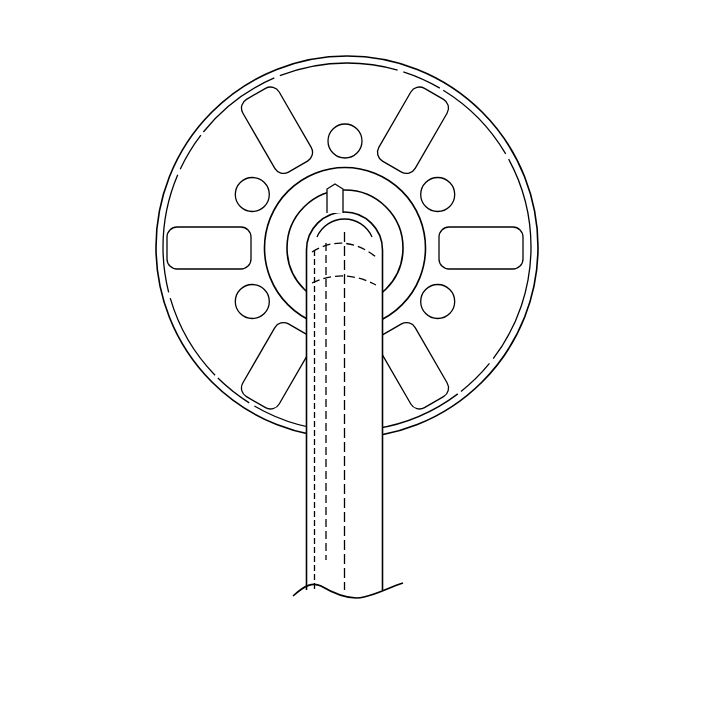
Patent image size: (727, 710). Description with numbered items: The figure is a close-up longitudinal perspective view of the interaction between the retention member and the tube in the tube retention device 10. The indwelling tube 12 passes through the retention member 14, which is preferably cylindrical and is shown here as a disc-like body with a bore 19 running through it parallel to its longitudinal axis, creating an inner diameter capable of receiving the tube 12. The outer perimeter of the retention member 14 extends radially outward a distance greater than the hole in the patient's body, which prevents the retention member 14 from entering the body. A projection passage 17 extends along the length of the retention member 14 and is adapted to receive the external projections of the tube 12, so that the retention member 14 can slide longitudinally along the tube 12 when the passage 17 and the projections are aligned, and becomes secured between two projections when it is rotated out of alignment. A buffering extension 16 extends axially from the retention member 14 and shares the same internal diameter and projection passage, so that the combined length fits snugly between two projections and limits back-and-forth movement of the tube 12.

The embodiment of the invention 10 is at (204, 59).
The indwelling tube 12 is at (368, 490).
The retention member 14 is at (478, 333).
The buffering extension 16 is at (385, 215).
The projection passage 17 is at (334, 203).
The bore 19 is at (398, 250).